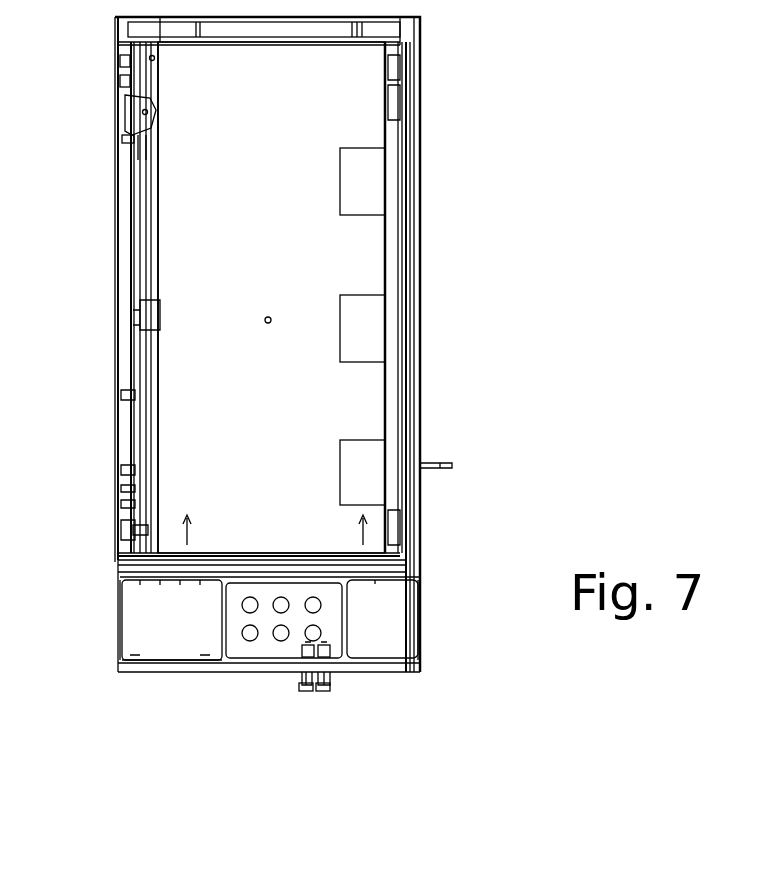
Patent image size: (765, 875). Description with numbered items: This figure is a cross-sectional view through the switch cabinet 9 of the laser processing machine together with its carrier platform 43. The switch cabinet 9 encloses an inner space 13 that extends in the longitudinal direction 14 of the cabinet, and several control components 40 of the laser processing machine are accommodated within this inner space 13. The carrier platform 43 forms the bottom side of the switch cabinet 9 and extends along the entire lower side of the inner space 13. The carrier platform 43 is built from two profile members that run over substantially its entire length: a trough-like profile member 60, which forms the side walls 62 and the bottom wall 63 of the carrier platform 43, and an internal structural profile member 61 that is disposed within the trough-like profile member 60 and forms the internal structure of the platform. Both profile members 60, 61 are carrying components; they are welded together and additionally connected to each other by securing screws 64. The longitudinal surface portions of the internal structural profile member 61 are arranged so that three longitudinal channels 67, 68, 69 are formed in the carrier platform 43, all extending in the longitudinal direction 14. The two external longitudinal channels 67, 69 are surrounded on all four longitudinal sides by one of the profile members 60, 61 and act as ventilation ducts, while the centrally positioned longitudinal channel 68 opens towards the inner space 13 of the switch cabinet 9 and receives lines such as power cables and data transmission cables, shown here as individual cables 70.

The switch cabinet 9 is at (478, 213).
The inner space 13 is at (273, 243).
The longitudinal direction 14 is at (265, 318).
The control components 40 is at (368, 462).
The carrier platform 43 is at (442, 597).
The trough-like profile member 60 is at (112, 603).
The internal structural profile member 61 is at (212, 643).
The side walls 62 is at (120, 626).
The bottom wall 63 is at (278, 668).
The securing screws 64 is at (322, 690).
The external longitudinal channel 67 is at (192, 635).
The central longitudinal channel 68 is at (265, 643).
The external longitudinal channel 69 is at (395, 631).
The cables 70 is at (281, 605).